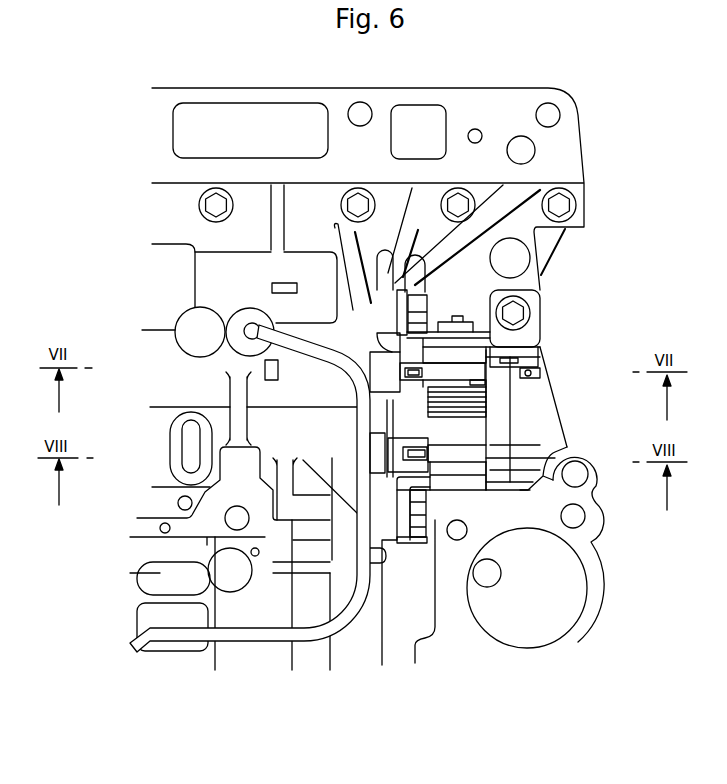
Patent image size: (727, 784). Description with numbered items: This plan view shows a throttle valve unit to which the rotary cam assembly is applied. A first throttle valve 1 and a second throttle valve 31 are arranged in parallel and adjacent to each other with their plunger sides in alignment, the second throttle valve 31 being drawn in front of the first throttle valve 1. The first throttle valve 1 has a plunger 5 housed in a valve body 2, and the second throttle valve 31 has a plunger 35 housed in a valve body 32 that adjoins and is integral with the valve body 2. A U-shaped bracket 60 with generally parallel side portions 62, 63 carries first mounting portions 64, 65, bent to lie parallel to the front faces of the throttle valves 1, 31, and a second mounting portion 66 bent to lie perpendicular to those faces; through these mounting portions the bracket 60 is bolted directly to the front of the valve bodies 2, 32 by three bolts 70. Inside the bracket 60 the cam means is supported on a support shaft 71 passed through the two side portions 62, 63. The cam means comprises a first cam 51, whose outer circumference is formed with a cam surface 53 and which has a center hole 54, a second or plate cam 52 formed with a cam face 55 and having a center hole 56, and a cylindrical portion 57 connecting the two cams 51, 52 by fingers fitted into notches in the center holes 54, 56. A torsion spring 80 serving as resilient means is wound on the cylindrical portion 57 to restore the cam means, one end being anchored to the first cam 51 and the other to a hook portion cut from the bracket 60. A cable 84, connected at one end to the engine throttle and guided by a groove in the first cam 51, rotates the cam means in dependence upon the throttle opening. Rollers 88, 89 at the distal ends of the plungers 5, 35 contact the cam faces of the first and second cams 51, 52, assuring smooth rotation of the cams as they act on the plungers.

The first throttle valve 1 is at (132, 331).
The valve body 2 is at (235, 320).
The valve body 32 is at (250, 332).
The plunger 5 is at (378, 366).
The second throttle valve 31 is at (132, 480).
The plunger 35 is at (383, 450).
The first cam 51 is at (517, 370).
The second cam 52 is at (505, 457).
The cam surface 53 is at (442, 372).
The center hole 54 is at (510, 352).
The cam face 55 is at (465, 455).
The center hole 56 is at (500, 445).
The cylindrical portion 57 is at (458, 410).
The bracket 60 is at (507, 425).
The side portion 62 is at (537, 283).
The side portion 63 is at (557, 523).
The first mounting portion 64 is at (397, 290).
The first mounting portion 65 is at (402, 545).
The second mounting portion 66 is at (530, 325).
The bolts 70 is at (424, 313).
The support shaft 71 is at (457, 325).
The torsion spring 80 is at (495, 402).
The cable 84 is at (535, 377).
The roller 88 is at (385, 395).
The roller 89 is at (420, 455).